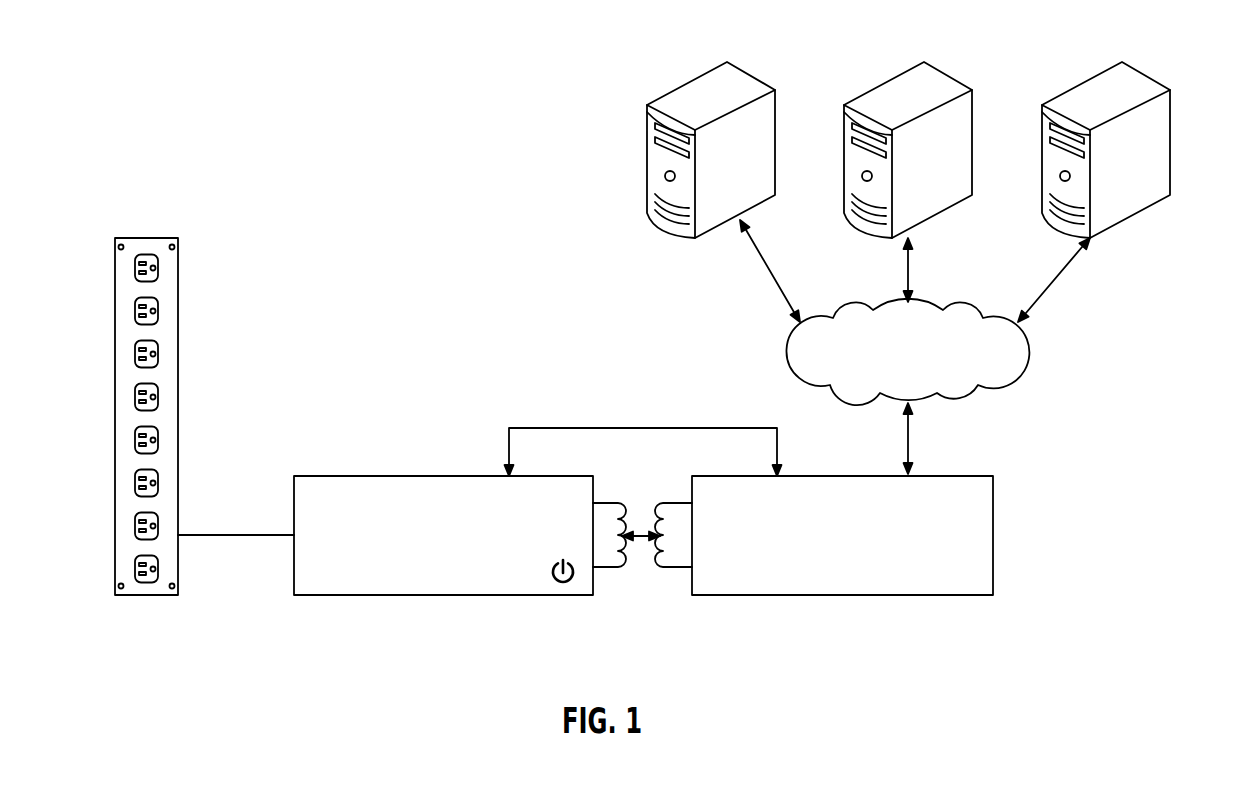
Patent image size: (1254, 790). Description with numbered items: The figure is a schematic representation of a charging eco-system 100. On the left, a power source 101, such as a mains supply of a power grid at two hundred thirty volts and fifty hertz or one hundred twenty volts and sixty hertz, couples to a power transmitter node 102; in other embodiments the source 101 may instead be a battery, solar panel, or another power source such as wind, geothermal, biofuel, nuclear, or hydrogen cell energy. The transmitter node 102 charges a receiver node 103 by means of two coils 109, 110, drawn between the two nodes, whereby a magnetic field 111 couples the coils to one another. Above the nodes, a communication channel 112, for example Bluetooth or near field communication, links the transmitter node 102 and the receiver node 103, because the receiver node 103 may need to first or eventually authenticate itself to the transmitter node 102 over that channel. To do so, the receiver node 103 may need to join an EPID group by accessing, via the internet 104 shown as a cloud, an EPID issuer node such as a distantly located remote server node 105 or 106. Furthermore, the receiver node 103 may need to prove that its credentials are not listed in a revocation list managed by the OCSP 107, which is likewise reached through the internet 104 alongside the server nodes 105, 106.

The charging eco-system 100 is at (288, 82).
The power source 101 is at (147, 238).
The power transmitter node 102 is at (370, 475).
The receiver node 103 is at (928, 475).
The internet 104 is at (960, 308).
The remote server node 105 is at (753, 72).
The remote server node 106 is at (948, 73).
The OCSP 107 is at (1145, 73).
The coil 109 is at (600, 569).
The coil 110 is at (685, 570).
The magnetic field 111 is at (636, 536).
The communication channel 112 is at (578, 428).